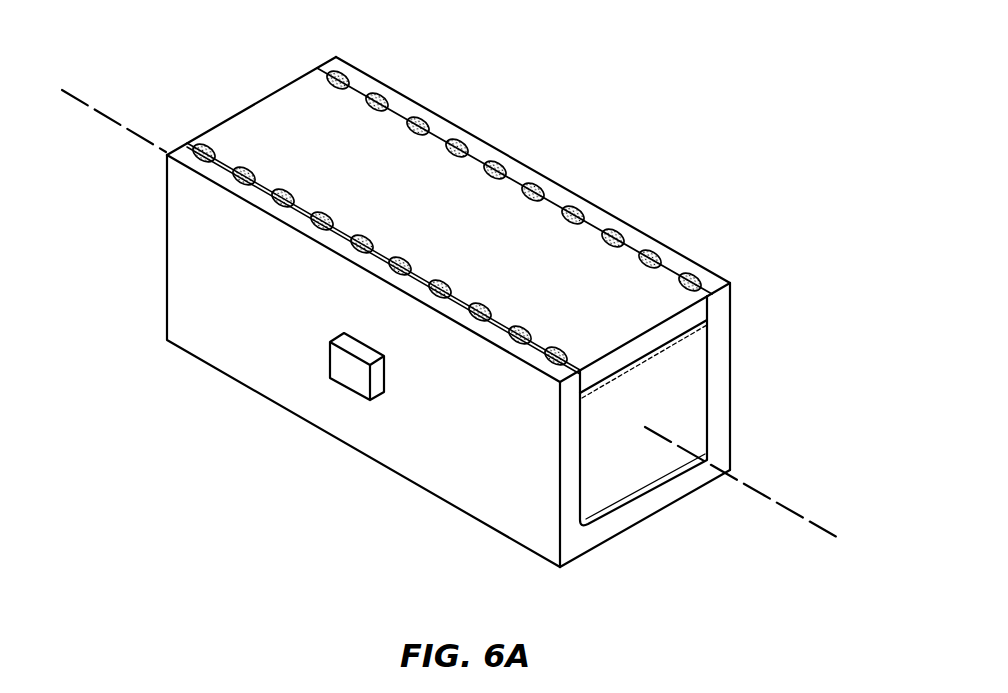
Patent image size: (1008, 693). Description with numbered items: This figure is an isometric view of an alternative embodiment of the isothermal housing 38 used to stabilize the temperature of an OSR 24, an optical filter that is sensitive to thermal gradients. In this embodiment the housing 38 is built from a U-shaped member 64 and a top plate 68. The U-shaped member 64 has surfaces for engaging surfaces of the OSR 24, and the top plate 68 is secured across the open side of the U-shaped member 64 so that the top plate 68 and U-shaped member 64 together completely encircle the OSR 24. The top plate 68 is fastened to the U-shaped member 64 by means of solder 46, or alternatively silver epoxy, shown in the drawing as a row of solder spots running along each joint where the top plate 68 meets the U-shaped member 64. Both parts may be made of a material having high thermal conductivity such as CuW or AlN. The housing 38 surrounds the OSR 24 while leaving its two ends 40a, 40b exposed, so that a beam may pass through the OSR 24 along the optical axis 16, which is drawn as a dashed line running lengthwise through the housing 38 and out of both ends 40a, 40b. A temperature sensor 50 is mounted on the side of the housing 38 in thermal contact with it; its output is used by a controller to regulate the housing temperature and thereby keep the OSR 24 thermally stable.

The optical axis 16 is at (788, 504).
The OSR 24 is at (636, 468).
The isothermal housing 38 is at (670, 178).
The end 40a is at (238, 62).
The end 40b is at (760, 388).
The solder 46 is at (244, 169).
The temperature sensor 50 is at (352, 370).
The U-shaped member 64 is at (577, 540).
The top plate 68 is at (532, 265).